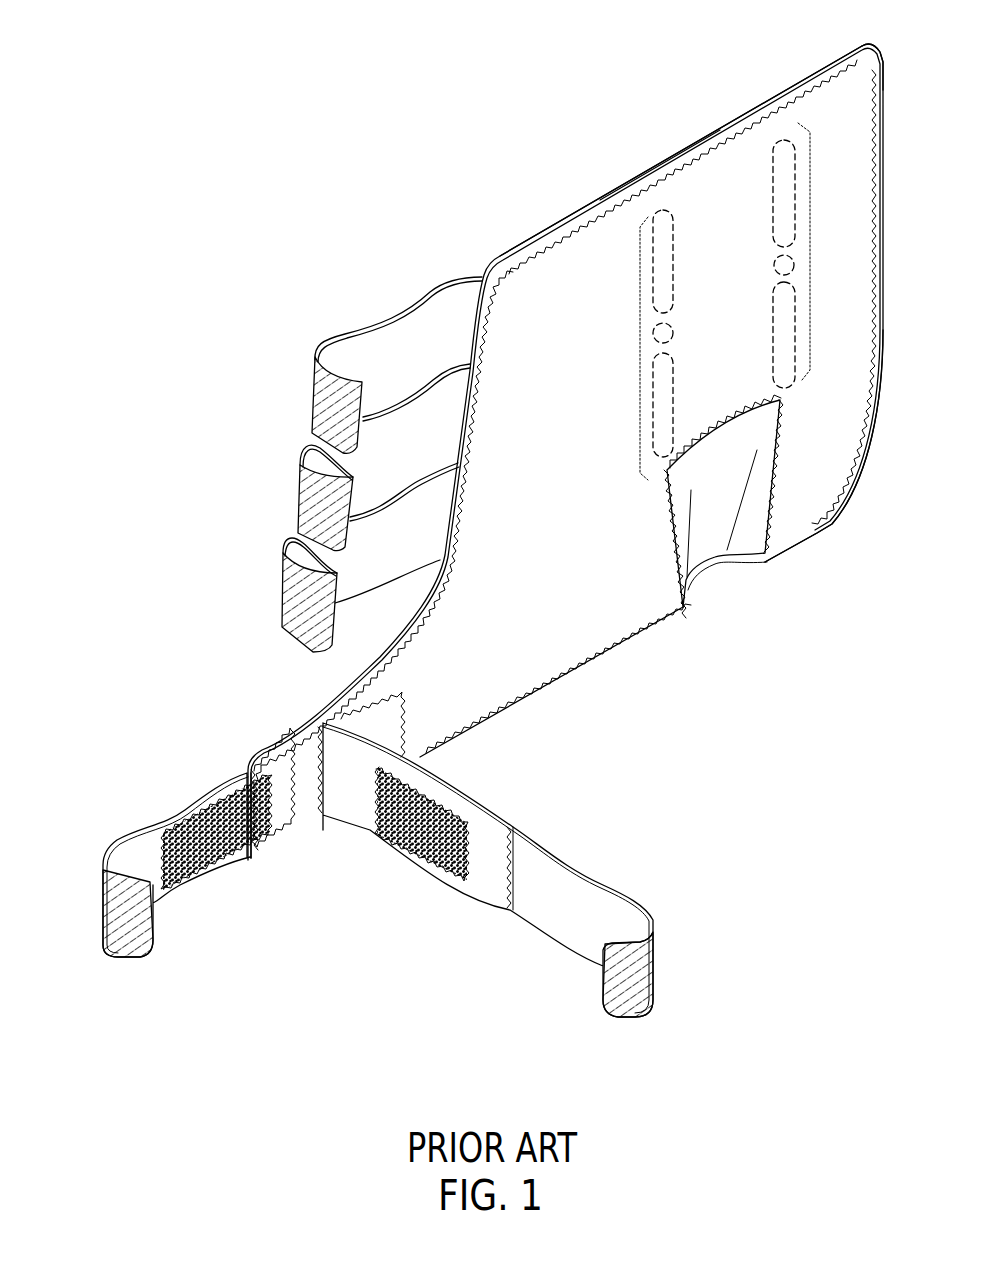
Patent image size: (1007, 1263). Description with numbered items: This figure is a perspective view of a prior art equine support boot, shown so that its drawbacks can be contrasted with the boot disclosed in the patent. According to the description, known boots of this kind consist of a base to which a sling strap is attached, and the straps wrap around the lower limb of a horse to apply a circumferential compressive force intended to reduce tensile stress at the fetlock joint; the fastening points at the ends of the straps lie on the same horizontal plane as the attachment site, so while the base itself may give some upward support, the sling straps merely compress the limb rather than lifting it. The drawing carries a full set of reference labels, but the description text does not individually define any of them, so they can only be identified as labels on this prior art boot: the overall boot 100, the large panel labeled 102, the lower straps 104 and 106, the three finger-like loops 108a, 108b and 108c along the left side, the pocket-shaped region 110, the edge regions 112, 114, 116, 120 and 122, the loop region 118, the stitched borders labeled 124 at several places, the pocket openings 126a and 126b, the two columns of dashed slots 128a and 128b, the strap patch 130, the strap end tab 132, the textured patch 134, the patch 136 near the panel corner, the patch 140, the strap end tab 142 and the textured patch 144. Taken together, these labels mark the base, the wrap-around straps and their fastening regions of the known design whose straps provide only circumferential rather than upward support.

The prior art hand orthosis 100 is at (466, 164).
The body panel 102 is at (740, 227).
The first strap 104 is at (216, 826).
The second strap 106 is at (486, 874).
The finger loop 108a is at (310, 400).
The finger loop 108b is at (300, 493).
The finger loop 108c is at (283, 587).
The pocket 110 is at (724, 478).
The top edge 112 is at (595, 197).
The corner 114 is at (887, 67).
The bottom edge 116 is at (580, 670).
The finger loops 118 is at (343, 464).
The top edge portion 120 is at (672, 160).
The side edge 122 is at (792, 508).
The stitching 124 is at (535, 248).
The pocket opening 126a is at (694, 505).
The pocket opening 126b is at (773, 462).
The slot set 128a is at (640, 352).
The slot set 128b is at (812, 258).
The fastener patch 130 is at (273, 850).
The strap end tab 132 is at (110, 960).
The hook and loop patch 134 is at (192, 880).
The fastener patch 136 is at (403, 703).
The fastener patch 140 is at (477, 902).
The strap end tab 142 is at (577, 957).
The hook and loop patch 144 is at (397, 835).